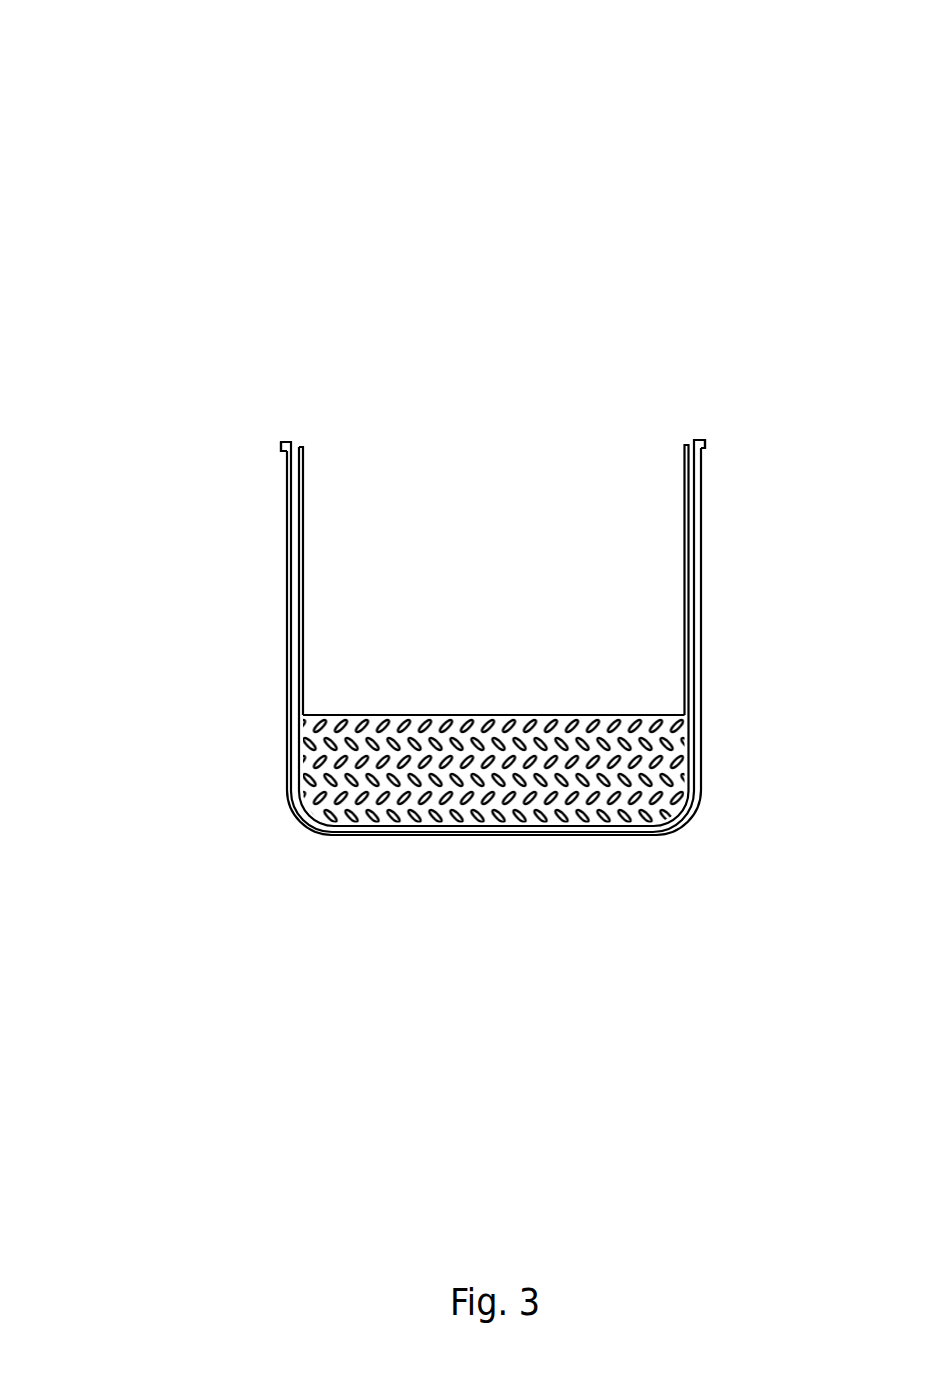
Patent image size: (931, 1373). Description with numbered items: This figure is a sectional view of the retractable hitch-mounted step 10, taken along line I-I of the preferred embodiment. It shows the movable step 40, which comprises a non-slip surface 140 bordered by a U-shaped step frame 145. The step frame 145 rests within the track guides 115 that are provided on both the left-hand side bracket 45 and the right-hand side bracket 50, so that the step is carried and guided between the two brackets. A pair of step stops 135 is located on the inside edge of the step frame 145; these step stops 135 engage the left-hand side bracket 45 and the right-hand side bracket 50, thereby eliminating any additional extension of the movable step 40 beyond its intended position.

The retractable hitch-mounted step 10 is at (130, 173).
The movable step 40 is at (690, 826).
The left-hand side bracket 45 is at (306, 590).
The right-hand side bracket 50 is at (685, 566).
The track guides 115 is at (300, 624).
The step stops 135 is at (290, 445).
The non-slip surface 140 is at (504, 776).
The step frame 145 is at (295, 542).